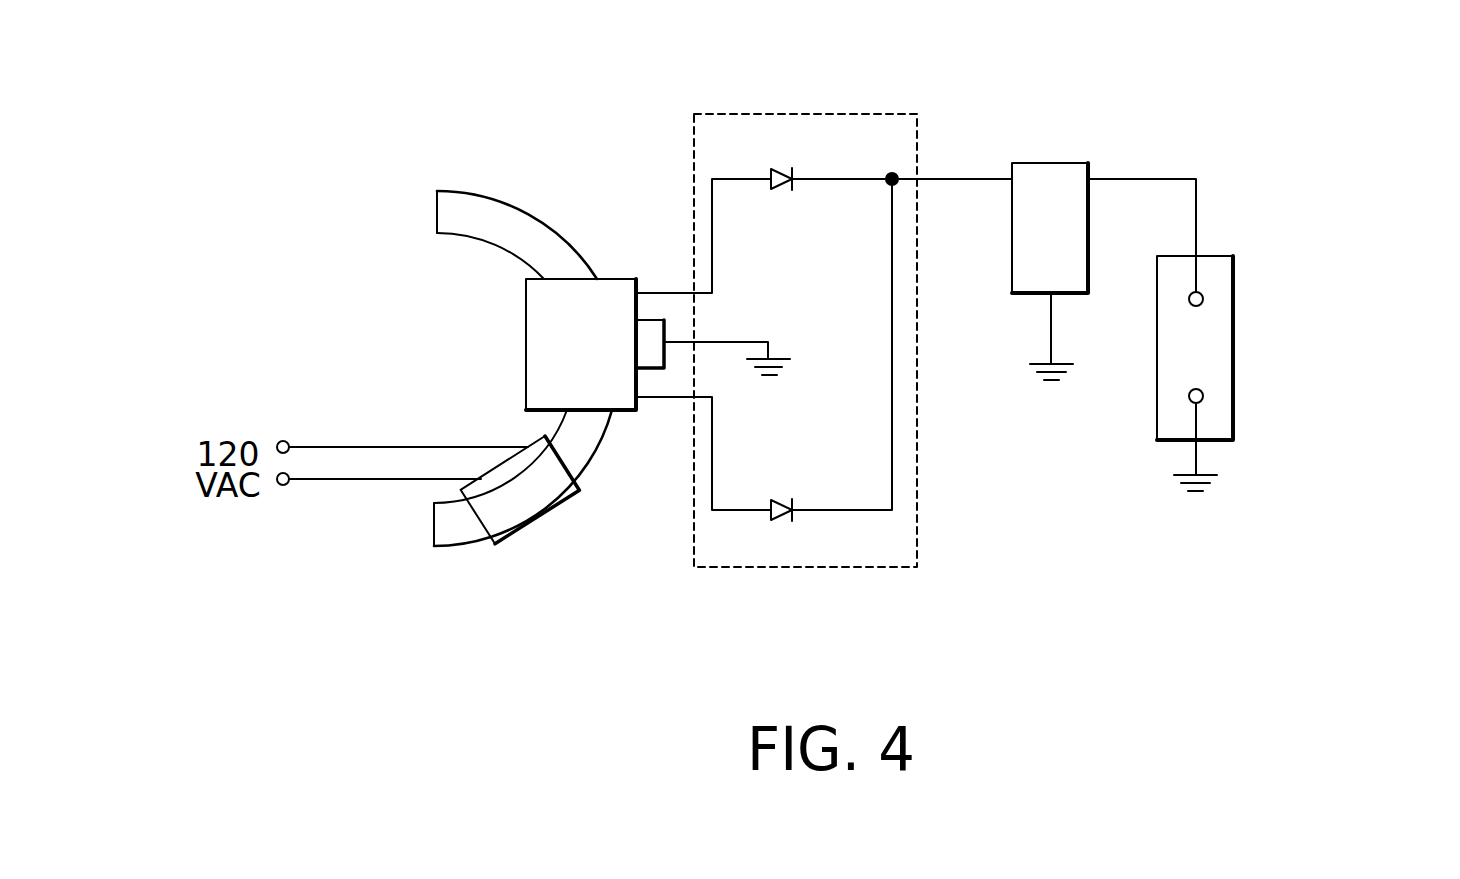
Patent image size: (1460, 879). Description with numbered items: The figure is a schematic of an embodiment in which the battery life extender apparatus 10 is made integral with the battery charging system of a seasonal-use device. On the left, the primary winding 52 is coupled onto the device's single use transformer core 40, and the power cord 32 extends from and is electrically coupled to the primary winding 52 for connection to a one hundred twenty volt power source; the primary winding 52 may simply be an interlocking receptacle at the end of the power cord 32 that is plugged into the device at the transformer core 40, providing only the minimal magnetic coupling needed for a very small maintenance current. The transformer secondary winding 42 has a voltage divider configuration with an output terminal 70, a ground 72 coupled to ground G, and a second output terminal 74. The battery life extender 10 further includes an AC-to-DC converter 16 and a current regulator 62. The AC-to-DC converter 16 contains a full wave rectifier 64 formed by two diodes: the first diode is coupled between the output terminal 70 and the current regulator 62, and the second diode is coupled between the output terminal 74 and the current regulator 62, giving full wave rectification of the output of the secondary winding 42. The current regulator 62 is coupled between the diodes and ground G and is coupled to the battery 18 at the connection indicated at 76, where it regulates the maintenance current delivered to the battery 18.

The battery life extender apparatus 10 is at (432, 122).
The AC-to-DC converter 16 is at (802, 113).
The battery 18 is at (1235, 290).
The power cord 32 is at (360, 516).
The transformer core 40 is at (508, 198).
The transformer secondary winding 42 is at (613, 279).
The primary winding 52 is at (523, 528).
The current regulator 62 is at (1058, 163).
The full wave rectifier 64 is at (884, 145).
The output terminal 70 is at (703, 236).
The ground 72 is at (713, 353).
The output terminal 74 is at (703, 453).
The coupling to battery 76 is at (1145, 179).